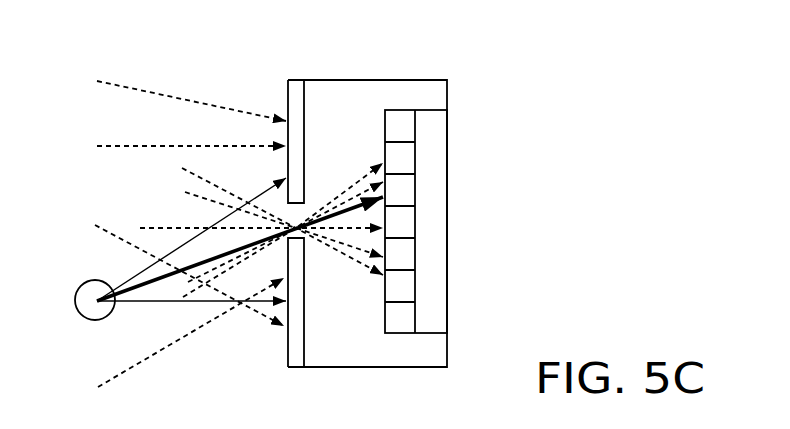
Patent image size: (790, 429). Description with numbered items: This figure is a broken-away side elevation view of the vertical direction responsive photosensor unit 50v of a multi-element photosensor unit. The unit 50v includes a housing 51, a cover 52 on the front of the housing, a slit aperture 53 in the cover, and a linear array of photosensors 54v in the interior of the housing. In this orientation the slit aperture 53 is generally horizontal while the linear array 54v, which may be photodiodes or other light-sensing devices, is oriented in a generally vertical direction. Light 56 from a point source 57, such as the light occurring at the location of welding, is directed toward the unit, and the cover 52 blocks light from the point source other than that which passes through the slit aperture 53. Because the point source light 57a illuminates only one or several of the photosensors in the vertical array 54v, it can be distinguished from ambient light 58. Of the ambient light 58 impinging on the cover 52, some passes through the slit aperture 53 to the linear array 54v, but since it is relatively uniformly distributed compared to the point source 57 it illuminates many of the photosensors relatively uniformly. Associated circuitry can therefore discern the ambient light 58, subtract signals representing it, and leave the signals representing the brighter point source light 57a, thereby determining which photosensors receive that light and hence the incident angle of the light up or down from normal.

The vertical direction responsive photosensor unit 50v is at (206, 84).
The housing 51 is at (348, 80).
The cover 52 is at (290, 92).
The slit aperture 53 is at (290, 222).
The linear array of photosensors 54v is at (405, 110).
The light 56 is at (143, 270).
The point source 57 is at (80, 314).
The point source light 57a is at (333, 206).
The ambient light 58 is at (143, 93).